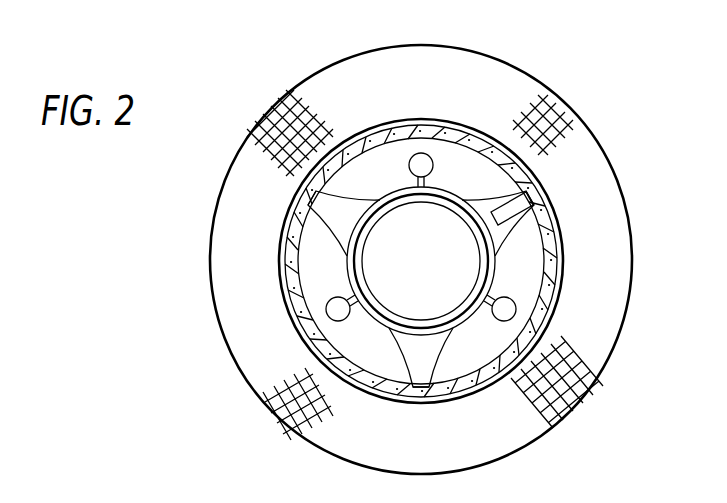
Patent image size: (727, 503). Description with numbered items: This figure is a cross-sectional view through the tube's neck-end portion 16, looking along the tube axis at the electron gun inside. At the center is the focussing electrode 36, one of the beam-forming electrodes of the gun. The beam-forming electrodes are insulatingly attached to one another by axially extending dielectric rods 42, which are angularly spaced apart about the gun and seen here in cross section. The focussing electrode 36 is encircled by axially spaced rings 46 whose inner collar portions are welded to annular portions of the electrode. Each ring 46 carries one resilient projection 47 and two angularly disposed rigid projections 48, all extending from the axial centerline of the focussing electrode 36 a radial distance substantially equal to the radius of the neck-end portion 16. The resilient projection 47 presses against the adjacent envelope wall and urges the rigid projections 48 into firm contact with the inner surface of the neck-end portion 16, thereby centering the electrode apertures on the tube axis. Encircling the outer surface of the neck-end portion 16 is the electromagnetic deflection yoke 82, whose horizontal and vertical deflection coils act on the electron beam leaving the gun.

The neck-end portion 16 is at (557, 283).
The focussing electrode 36 is at (405, 330).
The dielectric rods 42 is at (423, 165).
The rings 46 is at (345, 266).
The resilient projection 47 is at (527, 197).
The rigid projections 48 is at (318, 201).
The electromagnetic deflection yoke 82 is at (617, 331).